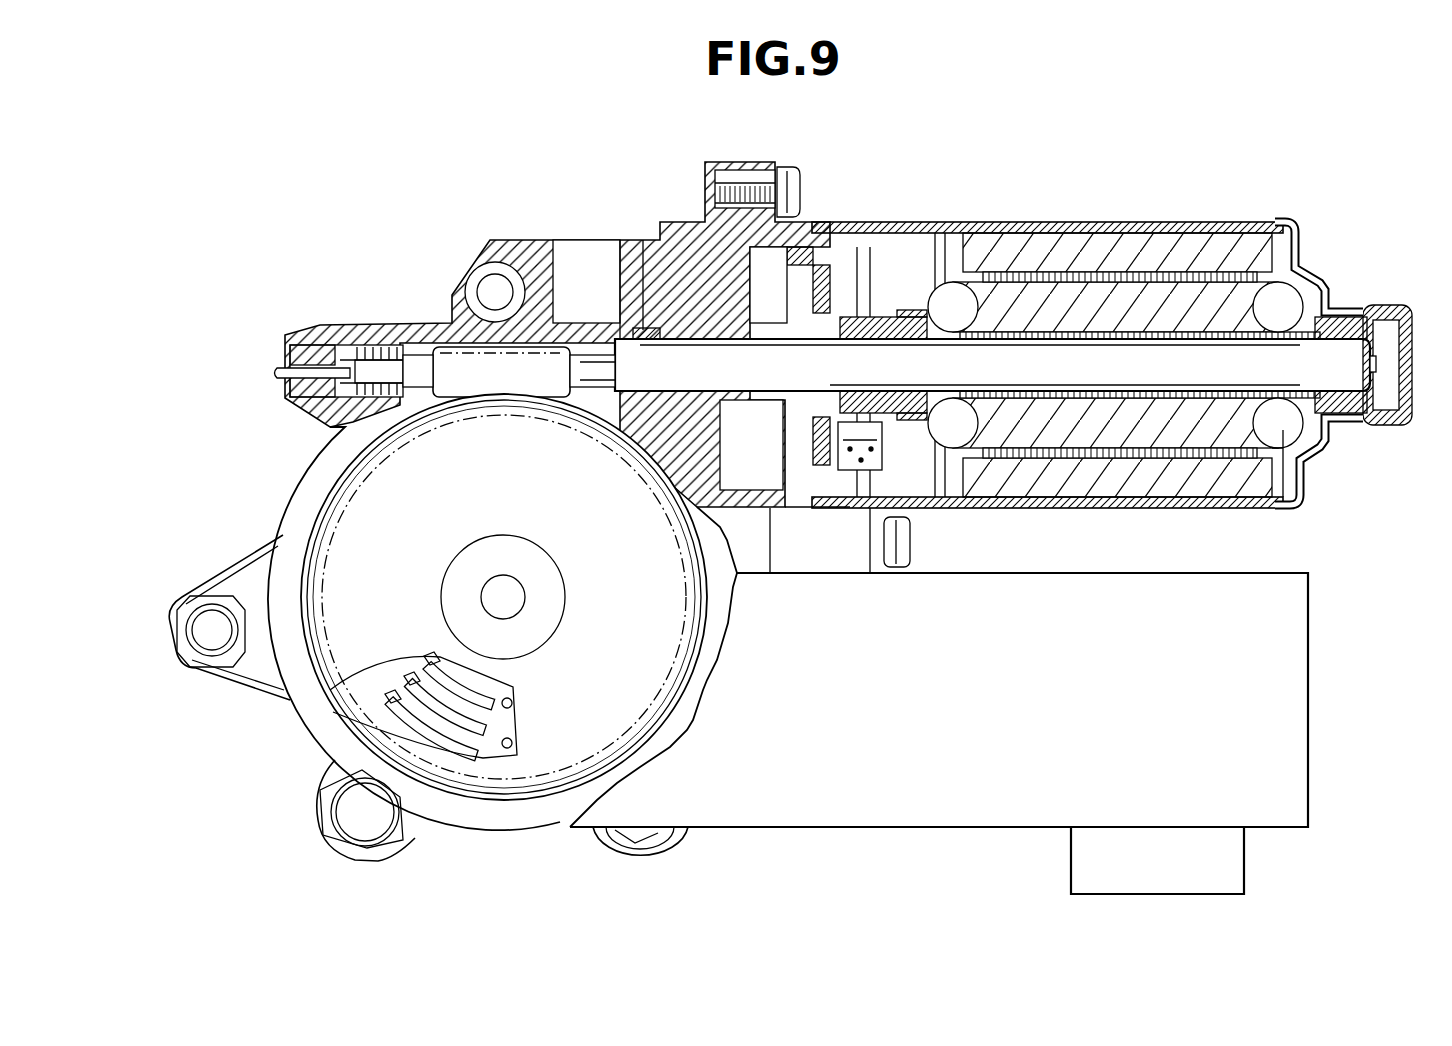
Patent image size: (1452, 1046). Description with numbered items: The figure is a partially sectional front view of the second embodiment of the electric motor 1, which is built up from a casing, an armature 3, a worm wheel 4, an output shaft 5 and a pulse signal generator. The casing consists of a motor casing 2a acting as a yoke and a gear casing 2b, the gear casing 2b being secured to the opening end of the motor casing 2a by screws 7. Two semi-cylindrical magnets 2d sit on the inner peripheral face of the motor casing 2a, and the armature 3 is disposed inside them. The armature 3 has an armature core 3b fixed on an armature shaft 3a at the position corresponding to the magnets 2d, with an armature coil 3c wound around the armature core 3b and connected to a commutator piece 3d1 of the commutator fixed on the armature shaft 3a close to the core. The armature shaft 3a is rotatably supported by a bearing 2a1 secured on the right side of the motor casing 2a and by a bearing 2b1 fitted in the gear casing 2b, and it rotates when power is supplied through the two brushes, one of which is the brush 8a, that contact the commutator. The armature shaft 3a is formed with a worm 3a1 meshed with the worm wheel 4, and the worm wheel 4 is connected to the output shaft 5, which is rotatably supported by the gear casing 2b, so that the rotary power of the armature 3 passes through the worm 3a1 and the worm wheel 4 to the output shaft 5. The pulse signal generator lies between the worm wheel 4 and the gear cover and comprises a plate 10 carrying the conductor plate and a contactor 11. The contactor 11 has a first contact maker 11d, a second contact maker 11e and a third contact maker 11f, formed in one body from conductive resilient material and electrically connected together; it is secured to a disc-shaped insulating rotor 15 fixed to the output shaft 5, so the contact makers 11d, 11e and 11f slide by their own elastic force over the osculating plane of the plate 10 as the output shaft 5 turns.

The electric motor 1 is at (434, 112).
The motor casing 2a is at (1170, 222).
The bearing 2a1 is at (1363, 420).
The gear casing 2b is at (443, 810).
The bearing 2b1 is at (641, 330).
The magnets 2d is at (953, 250).
The armature 3 is at (1293, 290).
The armature shaft 3a is at (1353, 317).
The worm 3a1 is at (437, 345).
The armature core 3b is at (1250, 453).
The armature coil 3c is at (1283, 433).
The commutator piece 3d1 is at (903, 313).
The worm wheel 4 is at (335, 473).
The output shaft 5 is at (487, 585).
The screws 7 is at (790, 183).
The brush 8a is at (880, 430).
The plate 10 is at (1308, 648).
The contactor 11 is at (518, 728).
The first contact maker 11d is at (426, 660).
The second contact maker 11e is at (407, 680).
The third contact maker 11f is at (400, 712).
The rotor 15 is at (488, 767).